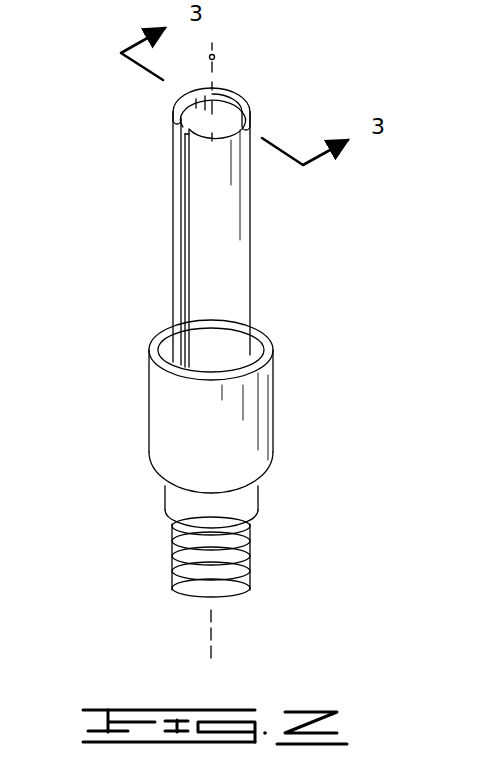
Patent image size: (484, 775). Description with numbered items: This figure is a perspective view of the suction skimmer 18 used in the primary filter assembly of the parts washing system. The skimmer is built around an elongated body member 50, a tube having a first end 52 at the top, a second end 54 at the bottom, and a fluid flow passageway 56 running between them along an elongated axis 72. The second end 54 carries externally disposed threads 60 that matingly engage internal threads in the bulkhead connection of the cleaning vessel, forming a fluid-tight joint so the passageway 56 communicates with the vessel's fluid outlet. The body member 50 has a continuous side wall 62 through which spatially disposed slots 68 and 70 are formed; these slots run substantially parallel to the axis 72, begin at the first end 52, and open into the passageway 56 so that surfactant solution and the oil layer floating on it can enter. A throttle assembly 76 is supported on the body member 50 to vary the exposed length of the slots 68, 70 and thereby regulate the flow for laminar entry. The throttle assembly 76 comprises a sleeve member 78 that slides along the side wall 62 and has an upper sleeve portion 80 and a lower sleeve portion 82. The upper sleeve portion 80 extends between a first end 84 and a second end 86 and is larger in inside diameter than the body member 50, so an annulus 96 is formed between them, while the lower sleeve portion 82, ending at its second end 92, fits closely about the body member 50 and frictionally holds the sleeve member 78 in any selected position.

The suction skimmer 18 is at (285, 259).
The elongated body member 50 is at (252, 228).
The first end 52 is at (250, 124).
The second end 54 is at (252, 558).
The fluid flow passageway 56 is at (222, 103).
The externally disposed threads 60 is at (185, 550).
The continuous side wall 62 is at (242, 303).
The slot 68 is at (185, 155).
The slot 70 is at (237, 95).
The elongated axis 72 is at (216, 53).
The throttle assembly 76 is at (137, 390).
The sleeve member 78 is at (278, 415).
The upper sleeve portion 80 is at (157, 368).
The lower sleeve portion 82 is at (262, 490).
The first end 84 is at (272, 352).
The second end 86 is at (153, 466).
The second end 92 is at (258, 509).
The annulus 96 is at (268, 333).